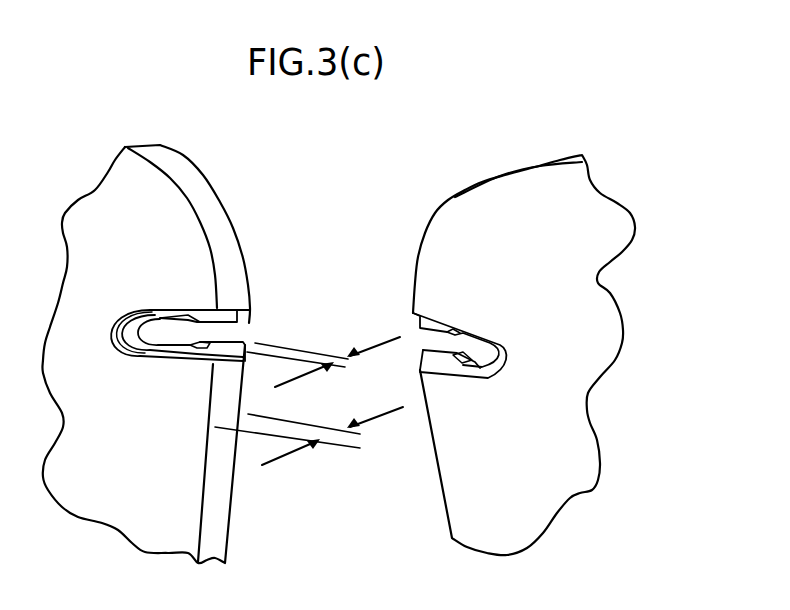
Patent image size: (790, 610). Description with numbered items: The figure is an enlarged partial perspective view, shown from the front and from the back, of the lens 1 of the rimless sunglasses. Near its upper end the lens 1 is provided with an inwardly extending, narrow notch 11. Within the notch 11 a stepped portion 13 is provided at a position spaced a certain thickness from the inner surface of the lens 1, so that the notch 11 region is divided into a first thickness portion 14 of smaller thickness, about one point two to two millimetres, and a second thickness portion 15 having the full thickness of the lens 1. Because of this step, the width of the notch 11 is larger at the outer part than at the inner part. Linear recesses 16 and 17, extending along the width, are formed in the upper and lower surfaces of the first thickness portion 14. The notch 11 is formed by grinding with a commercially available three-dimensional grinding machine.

The lens 1 is at (222, 222).
The notch 11 is at (153, 323).
The stepped portion 13 is at (160, 350).
The first thickness portion 14 is at (337, 357).
The second thickness portion 15 is at (330, 431).
The linear recess 16 is at (189, 316).
The linear recess 17 is at (194, 350).